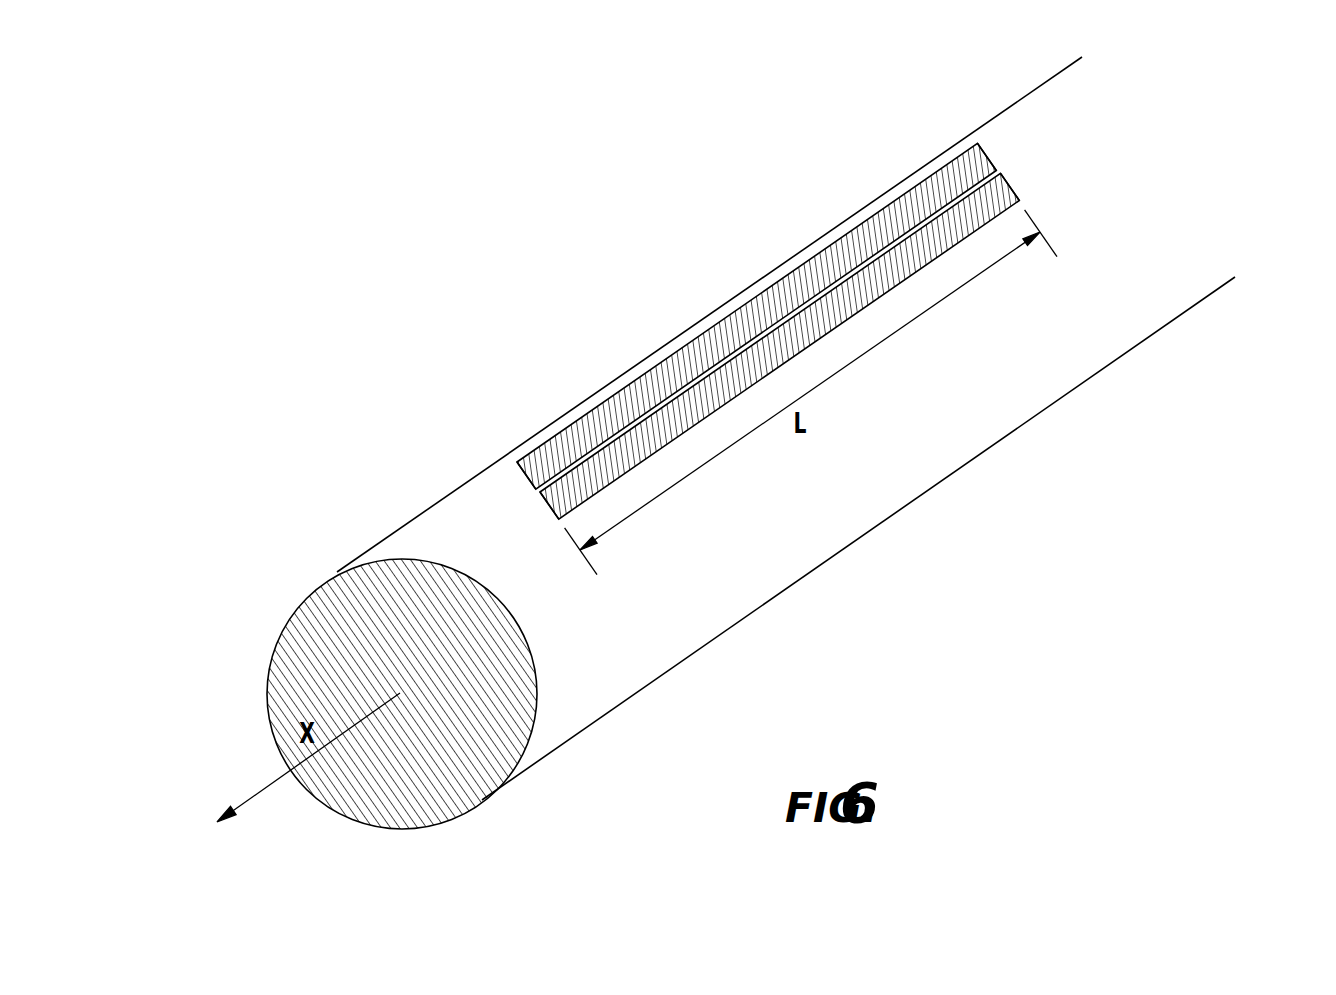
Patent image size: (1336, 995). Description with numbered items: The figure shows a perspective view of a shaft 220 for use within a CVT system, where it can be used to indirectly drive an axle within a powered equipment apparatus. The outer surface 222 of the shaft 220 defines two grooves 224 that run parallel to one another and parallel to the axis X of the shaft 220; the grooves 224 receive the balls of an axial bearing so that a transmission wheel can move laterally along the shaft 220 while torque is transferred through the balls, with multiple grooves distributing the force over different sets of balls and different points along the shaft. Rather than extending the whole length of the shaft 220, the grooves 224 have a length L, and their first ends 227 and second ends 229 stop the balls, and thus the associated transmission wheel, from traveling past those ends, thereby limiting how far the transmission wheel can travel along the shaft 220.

The shaft 220 is at (300, 658).
The outer surface 222 is at (545, 730).
The grooves 224 is at (580, 443).
The first ends 227 is at (523, 478).
The second ends 229 is at (990, 150).